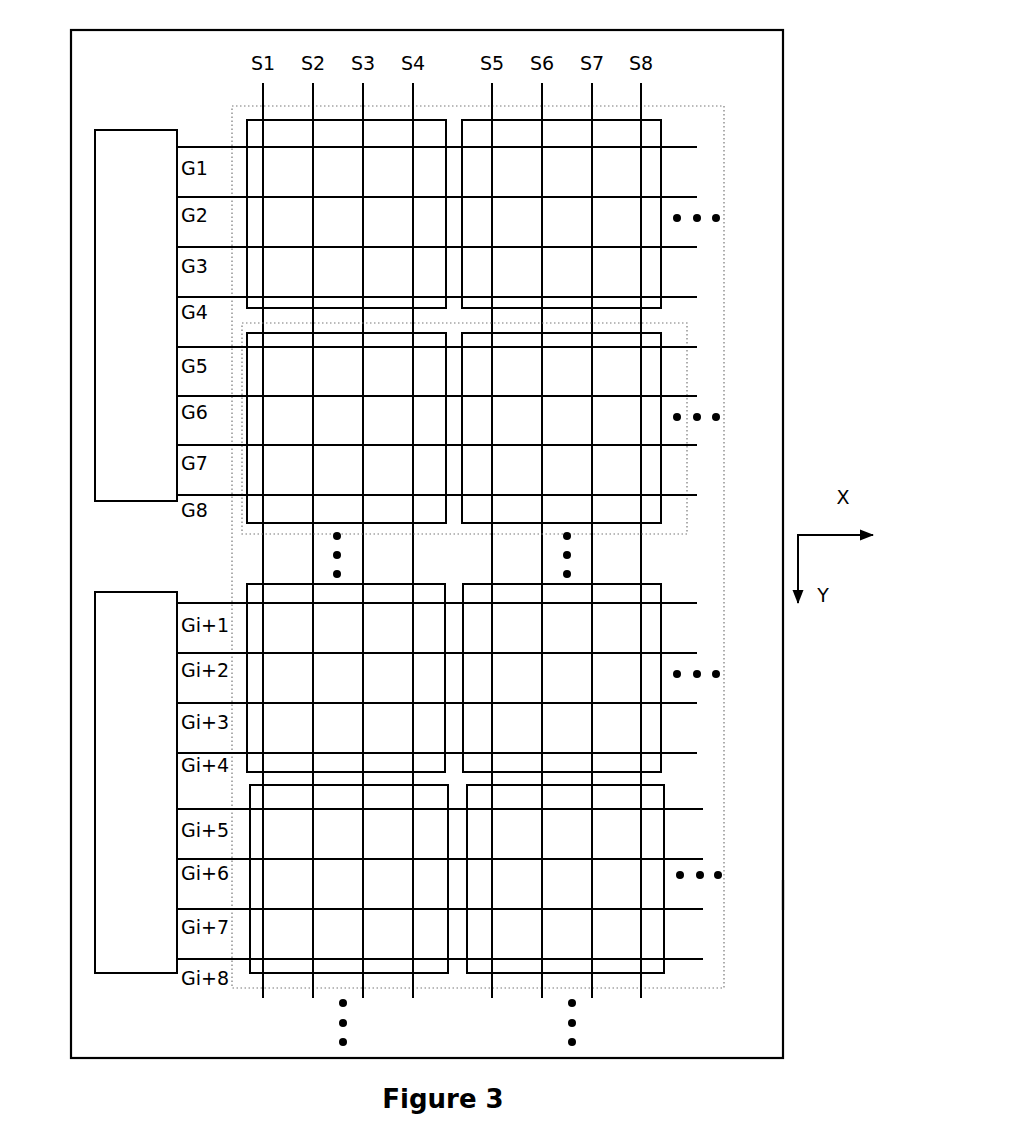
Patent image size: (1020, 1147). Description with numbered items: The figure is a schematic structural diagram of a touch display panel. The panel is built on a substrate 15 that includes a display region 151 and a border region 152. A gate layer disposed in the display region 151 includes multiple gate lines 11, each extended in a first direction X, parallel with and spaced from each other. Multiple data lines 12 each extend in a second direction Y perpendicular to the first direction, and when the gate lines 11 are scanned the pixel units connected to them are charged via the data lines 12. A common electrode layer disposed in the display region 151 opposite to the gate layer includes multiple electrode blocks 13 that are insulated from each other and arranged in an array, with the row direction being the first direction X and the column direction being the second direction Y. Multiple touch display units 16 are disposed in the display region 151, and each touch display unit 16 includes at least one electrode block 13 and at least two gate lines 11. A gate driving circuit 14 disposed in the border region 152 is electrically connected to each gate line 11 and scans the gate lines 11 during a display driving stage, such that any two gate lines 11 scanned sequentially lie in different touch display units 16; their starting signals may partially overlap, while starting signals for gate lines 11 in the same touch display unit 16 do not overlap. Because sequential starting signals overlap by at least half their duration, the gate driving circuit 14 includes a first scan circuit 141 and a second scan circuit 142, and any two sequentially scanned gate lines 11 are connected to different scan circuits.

The gate line 11 is at (693, 448).
The data line 12 is at (644, 107).
The electrode block 13 is at (662, 513).
The gate driving circuit 14 is at (104, 557).
The first scan circuit 141 is at (152, 129).
The second scan circuit 142 is at (152, 975).
The substrate 15 is at (784, 677).
The display region 151 is at (686, 800).
The border region 152 is at (766, 898).
The touch display unit 16 is at (689, 380).